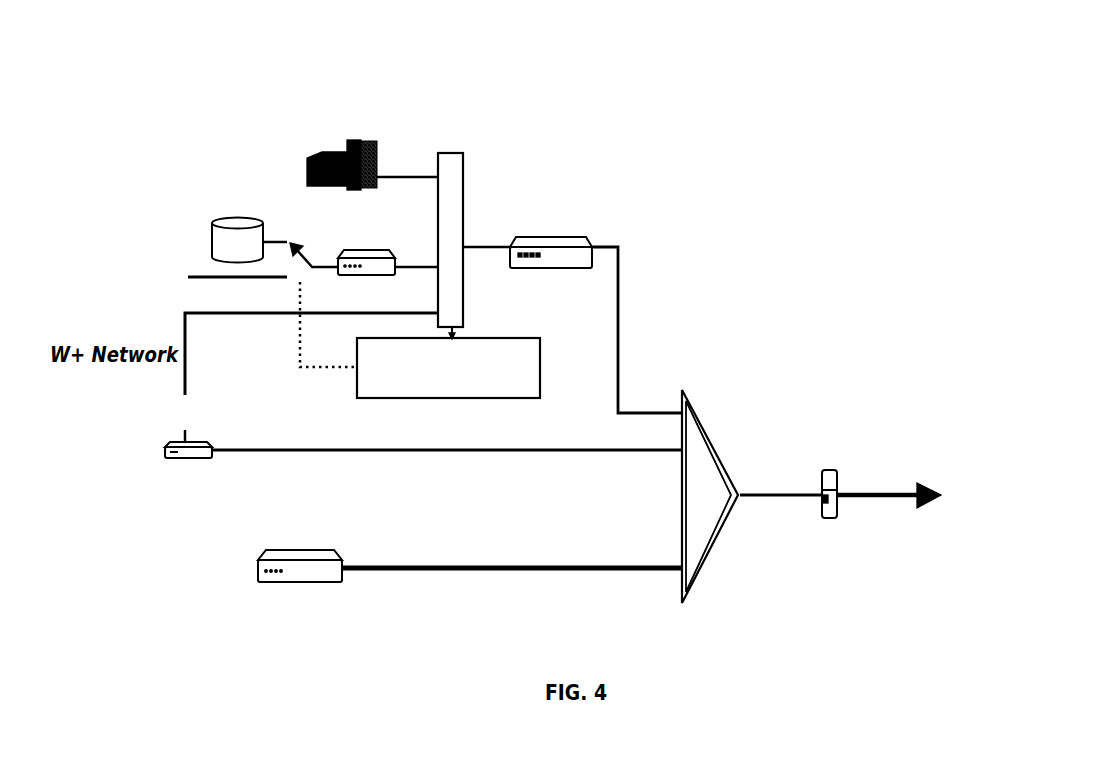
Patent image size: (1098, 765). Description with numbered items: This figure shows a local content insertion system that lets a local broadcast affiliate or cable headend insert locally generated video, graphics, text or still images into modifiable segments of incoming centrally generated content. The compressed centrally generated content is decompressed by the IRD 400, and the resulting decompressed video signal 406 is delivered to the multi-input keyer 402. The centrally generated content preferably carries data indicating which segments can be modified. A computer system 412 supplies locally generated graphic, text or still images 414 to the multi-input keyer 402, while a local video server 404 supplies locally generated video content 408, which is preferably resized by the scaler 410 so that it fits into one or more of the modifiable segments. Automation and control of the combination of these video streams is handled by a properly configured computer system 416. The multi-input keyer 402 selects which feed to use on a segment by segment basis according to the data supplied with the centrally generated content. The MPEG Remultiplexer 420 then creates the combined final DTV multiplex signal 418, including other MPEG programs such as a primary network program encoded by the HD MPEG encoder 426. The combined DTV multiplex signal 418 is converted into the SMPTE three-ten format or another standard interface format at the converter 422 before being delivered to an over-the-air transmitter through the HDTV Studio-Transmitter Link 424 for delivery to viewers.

The IRD 400 is at (152, 468).
The multi-input keyer 402 is at (468, 188).
The local video server 404 is at (203, 227).
The decompressed video signal 406 is at (212, 295).
The locally generated video content 408 is at (323, 252).
The scaler 410 is at (360, 277).
The computer system 412 is at (342, 137).
The locally generated graphic, text or still images 414 is at (407, 175).
The computer system 416 is at (517, 333).
The combined final DTV multiplex signal 418 is at (630, 295).
The MPEG Remultiplexer 420 is at (727, 462).
The SMPTE 310 converter 422 is at (837, 463).
The HDTV Studio-Transmitter Link (STL) 424 is at (907, 515).
The HD MPEG encoder 426 is at (252, 582).